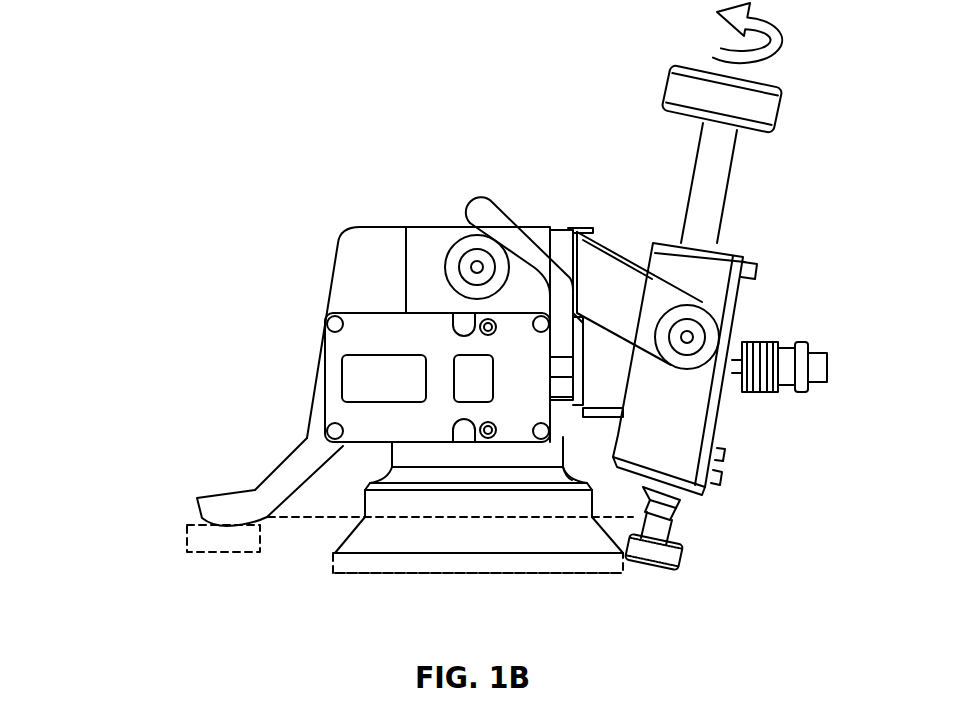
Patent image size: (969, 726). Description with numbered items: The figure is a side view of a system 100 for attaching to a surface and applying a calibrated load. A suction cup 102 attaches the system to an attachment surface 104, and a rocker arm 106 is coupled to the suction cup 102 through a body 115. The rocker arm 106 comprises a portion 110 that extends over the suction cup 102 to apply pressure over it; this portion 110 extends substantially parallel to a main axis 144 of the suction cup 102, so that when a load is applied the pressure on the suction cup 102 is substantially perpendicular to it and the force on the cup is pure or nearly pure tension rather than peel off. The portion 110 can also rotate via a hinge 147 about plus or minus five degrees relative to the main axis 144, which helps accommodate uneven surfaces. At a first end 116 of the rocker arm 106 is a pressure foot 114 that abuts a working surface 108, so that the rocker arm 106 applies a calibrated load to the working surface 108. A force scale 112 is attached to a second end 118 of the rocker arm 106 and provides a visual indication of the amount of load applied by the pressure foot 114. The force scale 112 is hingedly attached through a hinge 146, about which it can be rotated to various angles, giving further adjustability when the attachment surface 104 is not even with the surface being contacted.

The system 100 is at (197, 179).
The suction cup 102 is at (373, 556).
The attachment surface 104 is at (488, 572).
The rocker arm 106 is at (343, 276).
The working surface 108 is at (205, 555).
The portion 110 is at (376, 244).
The force scale 112 is at (746, 303).
The pressure foot 114 is at (230, 489).
The body 115 is at (342, 372).
The first end 116 is at (259, 431).
The second end 118 is at (606, 297).
The main axis 144 is at (317, 520).
The hinge 146 is at (690, 336).
The hinge 147 is at (475, 265).